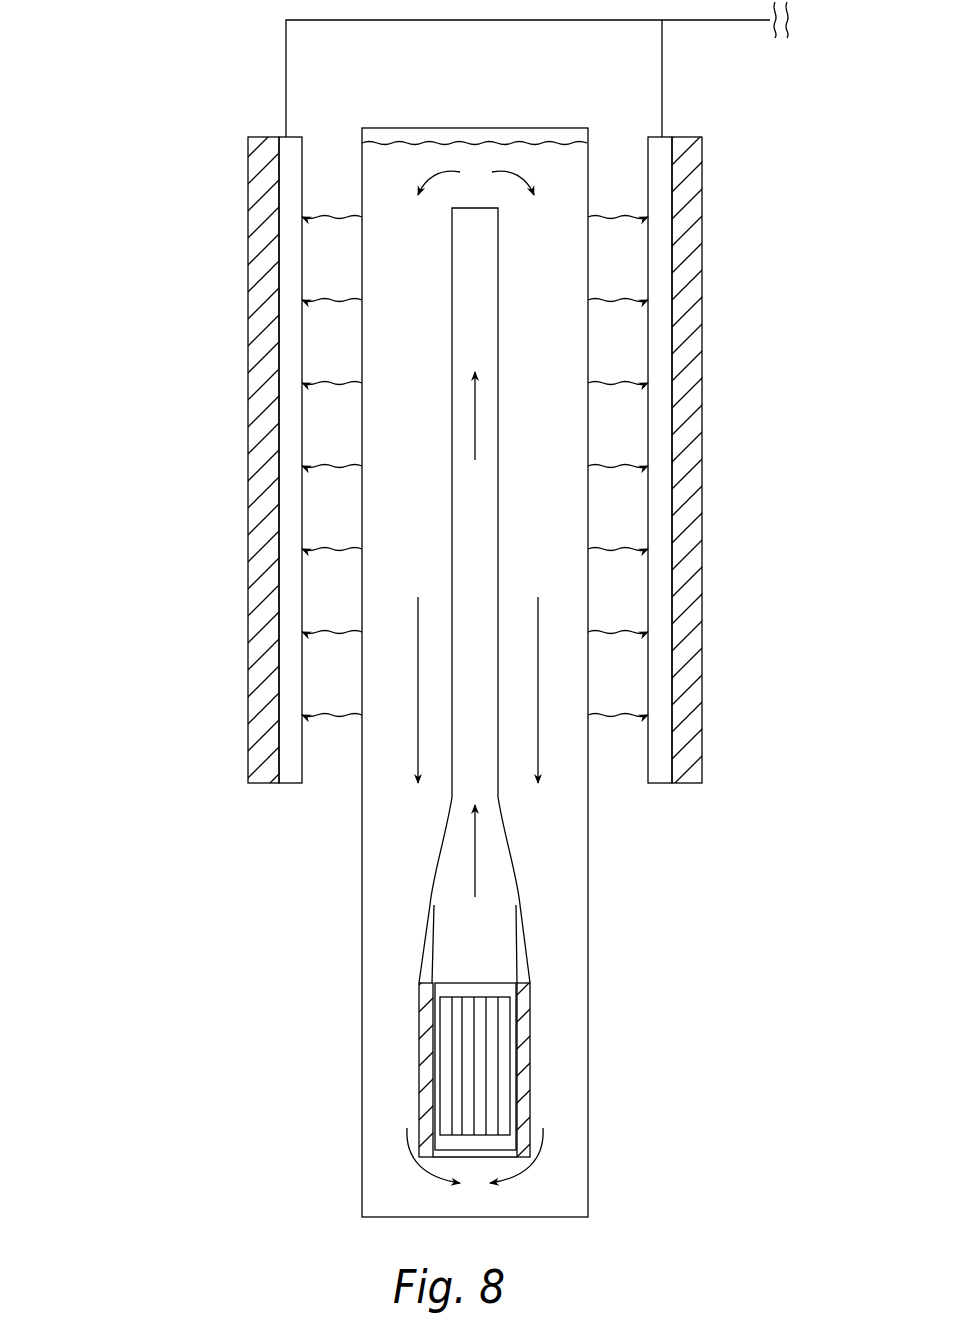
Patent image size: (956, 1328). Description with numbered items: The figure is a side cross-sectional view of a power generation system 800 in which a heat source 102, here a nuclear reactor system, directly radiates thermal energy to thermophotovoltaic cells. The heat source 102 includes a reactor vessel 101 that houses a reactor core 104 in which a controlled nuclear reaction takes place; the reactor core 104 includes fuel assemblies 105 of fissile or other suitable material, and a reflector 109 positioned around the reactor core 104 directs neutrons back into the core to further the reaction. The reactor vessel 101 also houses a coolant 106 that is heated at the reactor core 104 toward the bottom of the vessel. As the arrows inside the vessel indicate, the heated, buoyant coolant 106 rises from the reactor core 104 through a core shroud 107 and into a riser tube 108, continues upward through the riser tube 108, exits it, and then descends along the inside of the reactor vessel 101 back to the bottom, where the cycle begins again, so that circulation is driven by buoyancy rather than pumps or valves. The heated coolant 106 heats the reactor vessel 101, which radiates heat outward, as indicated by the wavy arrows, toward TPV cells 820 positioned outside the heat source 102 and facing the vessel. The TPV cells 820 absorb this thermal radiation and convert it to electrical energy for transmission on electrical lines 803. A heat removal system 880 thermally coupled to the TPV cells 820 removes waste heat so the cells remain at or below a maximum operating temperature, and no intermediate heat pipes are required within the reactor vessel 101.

The power generation system 800 is at (167, 105).
The electrical lines 803 is at (286, 58).
The heat removal system 880 is at (262, 262).
The TPV cells 820 is at (290, 375).
The coolant 106 is at (530, 143).
The heat source 102 is at (541, 672).
The reactor vessel 101 is at (588, 932).
The riser tube 108 is at (452, 797).
The core shroud 107 is at (422, 940).
The reactor core 104 is at (440, 993).
The fuel assemblies 105 is at (503, 1062).
The reflector 109 is at (425, 1090).